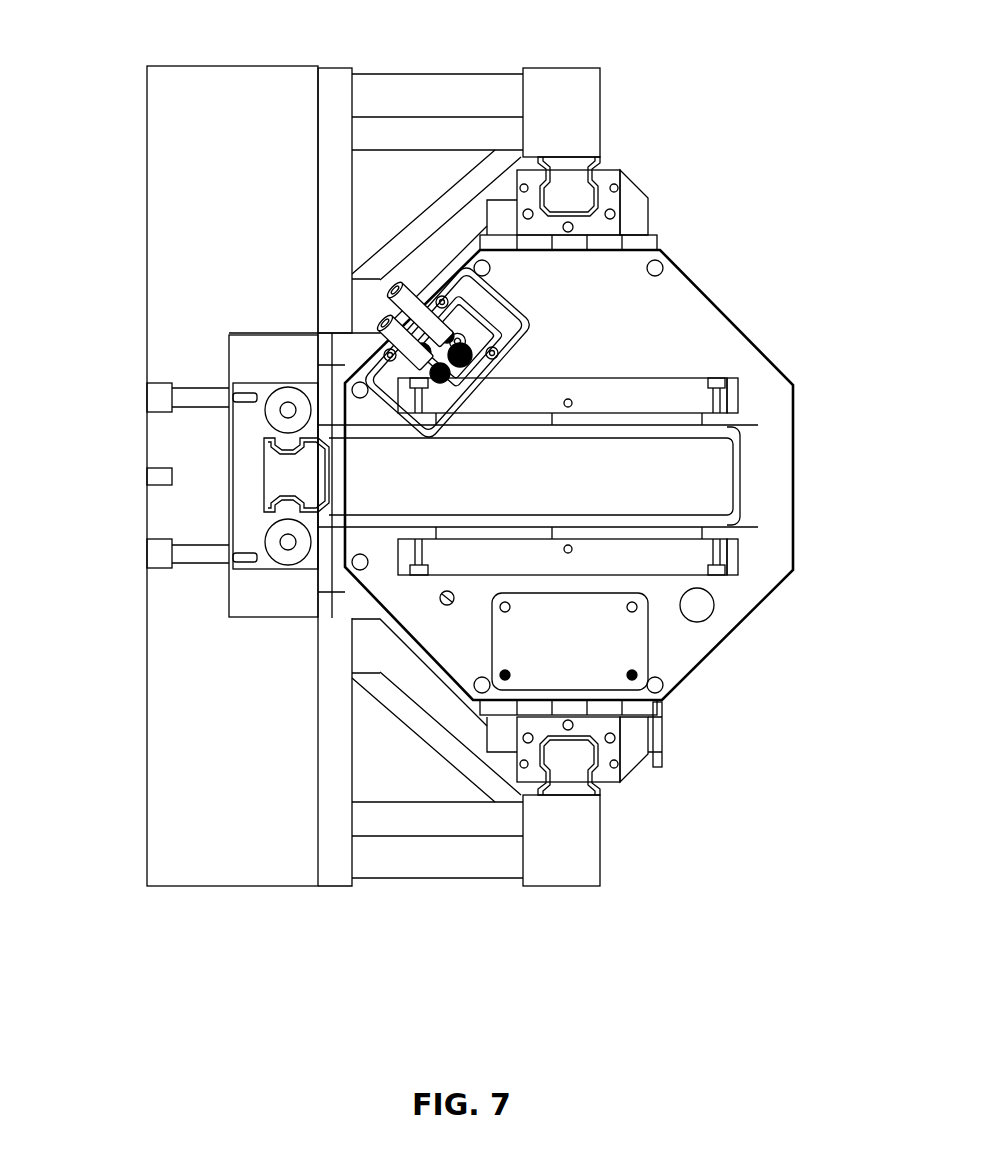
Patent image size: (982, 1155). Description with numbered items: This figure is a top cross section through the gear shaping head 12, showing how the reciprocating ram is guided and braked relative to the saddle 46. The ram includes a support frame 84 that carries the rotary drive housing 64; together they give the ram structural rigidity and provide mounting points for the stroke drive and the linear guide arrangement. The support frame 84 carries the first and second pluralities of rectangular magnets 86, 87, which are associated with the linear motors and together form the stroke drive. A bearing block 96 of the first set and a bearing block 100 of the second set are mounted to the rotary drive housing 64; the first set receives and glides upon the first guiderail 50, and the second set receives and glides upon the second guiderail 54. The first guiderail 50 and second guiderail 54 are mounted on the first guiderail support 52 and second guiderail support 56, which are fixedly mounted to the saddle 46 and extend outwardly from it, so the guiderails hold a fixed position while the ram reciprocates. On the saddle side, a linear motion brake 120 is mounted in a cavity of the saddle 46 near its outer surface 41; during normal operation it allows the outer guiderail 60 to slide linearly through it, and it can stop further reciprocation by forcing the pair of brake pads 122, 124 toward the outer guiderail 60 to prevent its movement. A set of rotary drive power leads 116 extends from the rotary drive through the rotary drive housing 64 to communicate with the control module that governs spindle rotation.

The gear shaping head 12 is at (420, 958).
The outer surface 41 is at (352, 815).
The saddle 46 is at (185, 148).
The first guiderail 50 is at (585, 795).
The first guiderail support 52 is at (555, 867).
The second guiderail 54 is at (585, 165).
The second guiderail support 56 is at (555, 85).
The outer guiderail 60 is at (286, 477).
The rotary drive housing 64 is at (680, 267).
The support frame 84 is at (712, 517).
The first plurality of rectangular magnets 86 is at (738, 562).
The second plurality of rectangular magnets 87 is at (738, 395).
The bearing block 96 is at (610, 750).
The bearing block 100 is at (612, 202).
The rotary drive power leads 116 is at (387, 320).
The linear motion brake 120 is at (222, 457).
The brake pad 122 is at (288, 447).
The brake pad 124 is at (288, 505).